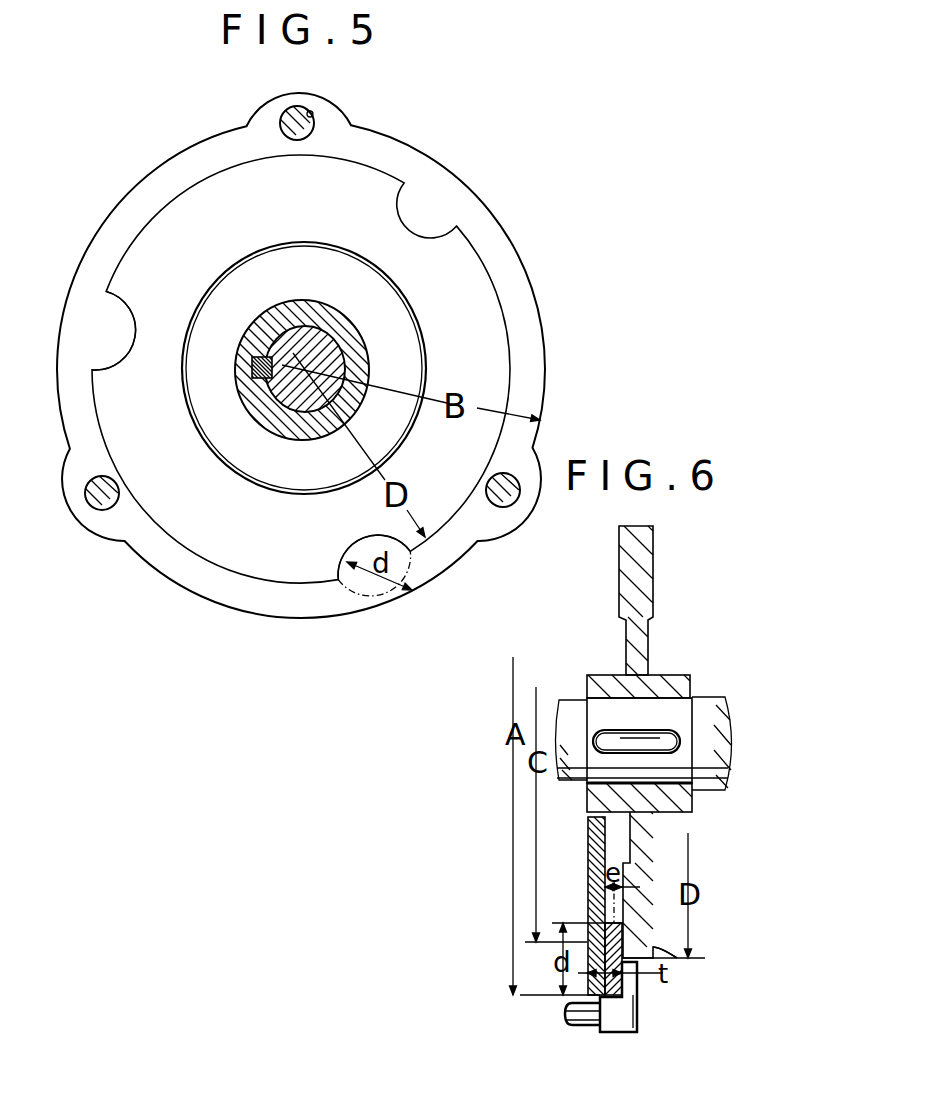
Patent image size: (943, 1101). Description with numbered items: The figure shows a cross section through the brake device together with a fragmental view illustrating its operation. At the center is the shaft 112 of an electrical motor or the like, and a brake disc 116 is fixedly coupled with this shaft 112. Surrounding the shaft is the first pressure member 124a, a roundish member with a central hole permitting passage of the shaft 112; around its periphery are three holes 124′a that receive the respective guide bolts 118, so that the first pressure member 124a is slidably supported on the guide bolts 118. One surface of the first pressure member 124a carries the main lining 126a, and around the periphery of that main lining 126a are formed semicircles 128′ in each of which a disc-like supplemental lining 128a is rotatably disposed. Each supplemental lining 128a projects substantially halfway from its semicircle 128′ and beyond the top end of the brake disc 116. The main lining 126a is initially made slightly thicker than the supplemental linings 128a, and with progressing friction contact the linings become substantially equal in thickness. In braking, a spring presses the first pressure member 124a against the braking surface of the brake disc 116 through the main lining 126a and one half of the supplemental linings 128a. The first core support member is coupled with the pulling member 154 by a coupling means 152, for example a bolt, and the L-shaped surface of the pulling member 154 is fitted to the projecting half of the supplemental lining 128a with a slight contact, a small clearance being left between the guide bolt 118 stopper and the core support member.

In FIG. 6, the shaft 112 is at (662, 708).
In FIG. 5, the brake disc 116 is at (393, 323).
In FIG. 6, the brake disc 116 is at (643, 568).
In FIG. 5, the guide bolt 118 is at (297, 118).
In FIG. 5, the first pressure member 124a is at (437, 205).
In FIG. 6, the first pressure member 124a is at (597, 847).
In FIG. 5, the holes 124′a is at (318, 112).
In FIG. 5, the main lining 126a is at (178, 237).
In FIG. 5, the semicircles 128′ is at (358, 552).
In FIG. 6, the supplemental linings 128a is at (667, 958).
In FIG. 6, the coupling means 152 is at (580, 1015).
In FIG. 6, the pulling member 154 is at (628, 1020).